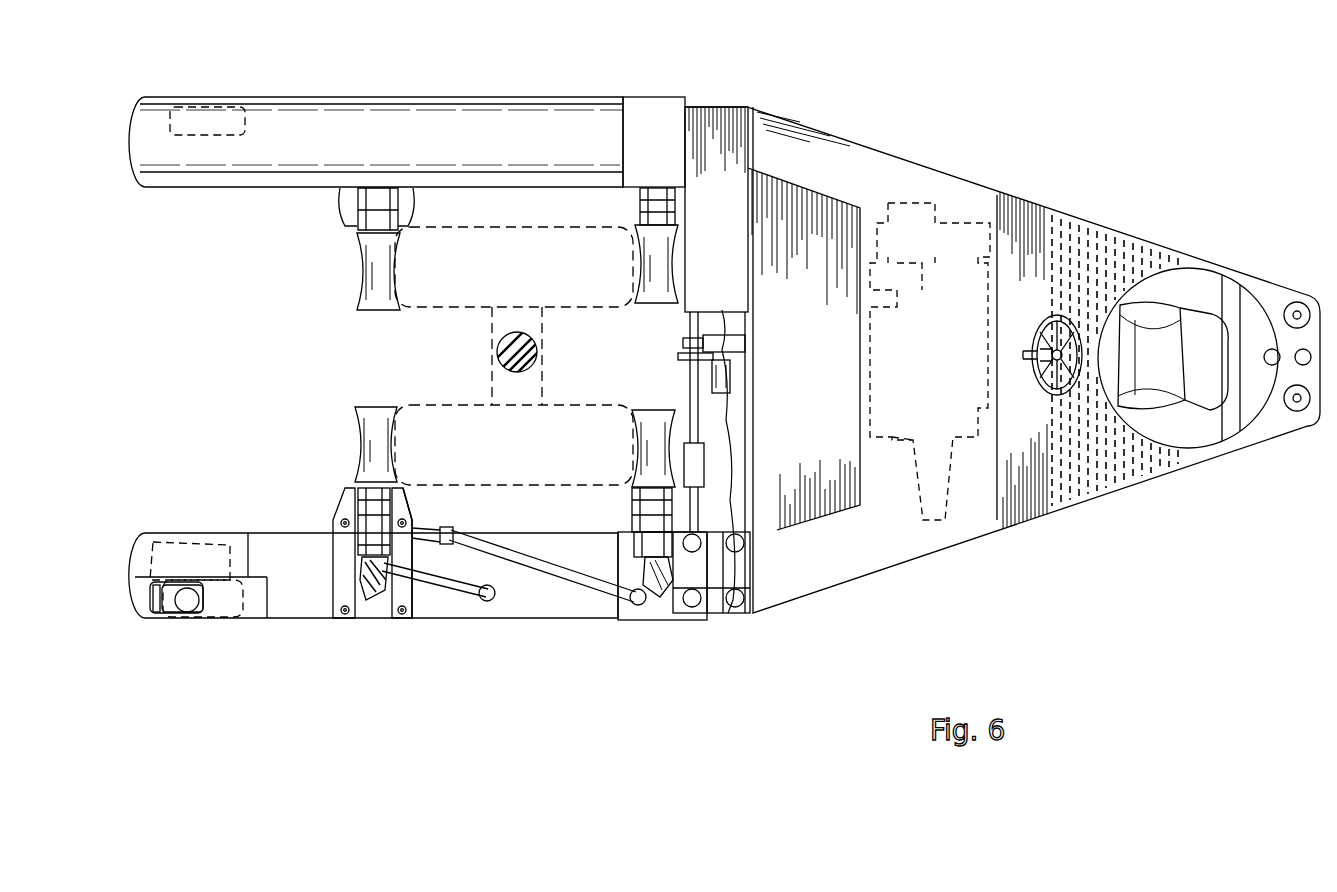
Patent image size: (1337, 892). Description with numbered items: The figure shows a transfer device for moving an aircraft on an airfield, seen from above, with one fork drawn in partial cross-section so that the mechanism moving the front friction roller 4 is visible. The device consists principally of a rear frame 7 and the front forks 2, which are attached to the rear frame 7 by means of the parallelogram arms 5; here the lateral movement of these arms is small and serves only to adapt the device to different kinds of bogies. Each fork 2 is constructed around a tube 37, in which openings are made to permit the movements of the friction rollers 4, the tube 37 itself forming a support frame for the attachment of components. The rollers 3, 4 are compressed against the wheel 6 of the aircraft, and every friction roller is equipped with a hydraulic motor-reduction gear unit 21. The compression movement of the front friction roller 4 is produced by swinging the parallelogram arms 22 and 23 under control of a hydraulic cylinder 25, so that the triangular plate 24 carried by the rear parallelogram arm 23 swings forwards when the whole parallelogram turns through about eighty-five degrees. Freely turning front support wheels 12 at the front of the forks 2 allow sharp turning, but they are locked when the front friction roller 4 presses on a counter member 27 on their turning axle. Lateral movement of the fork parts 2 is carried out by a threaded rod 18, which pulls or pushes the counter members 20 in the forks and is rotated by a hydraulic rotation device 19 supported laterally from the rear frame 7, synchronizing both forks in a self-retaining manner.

The front fork 2 is at (208, 219).
The friction roller 3 is at (637, 276).
The front friction roller 4 is at (382, 300).
The parallelogram arm 5 is at (719, 634).
The aircraft wheel 6 is at (516, 280).
The rear frame 7 is at (992, 155).
The front support wheel 12 is at (240, 106).
The threaded rod 18 is at (689, 396).
The hydraulic rotation device 19 is at (655, 331).
The counter member 20 is at (703, 462).
The hydraulic motor-reduction gear unit 21 is at (370, 537).
The parallelogram arm 22 is at (347, 557).
The rear parallelogram arm 23 is at (407, 555).
The triangular plate 24 is at (375, 607).
The hydraulic cylinder 25 is at (492, 548).
The counter member 27 is at (208, 608).
The tube 37 is at (378, 159).